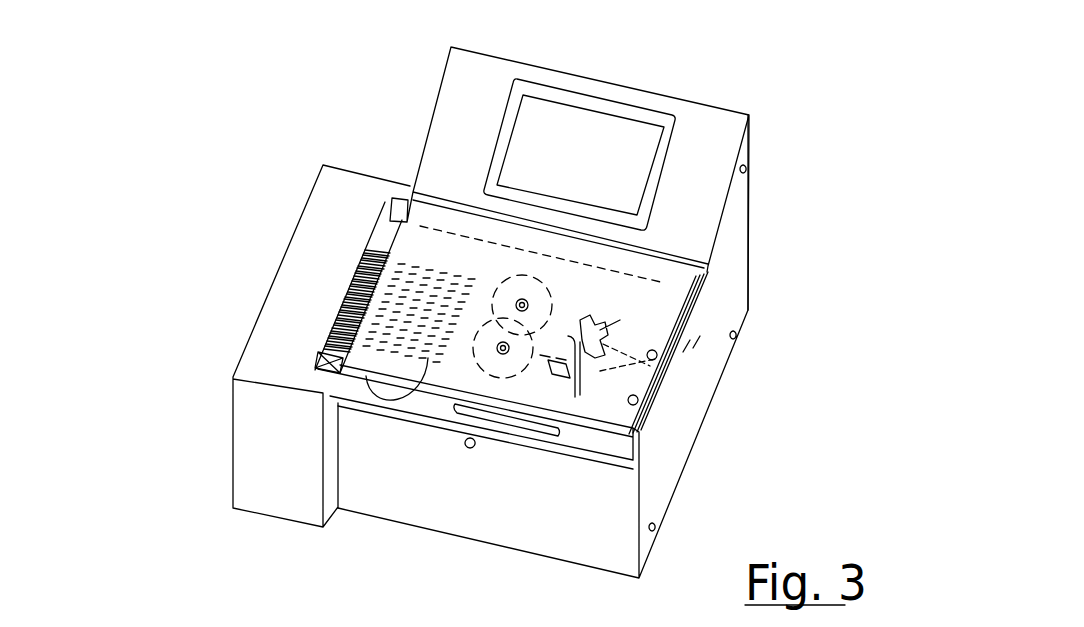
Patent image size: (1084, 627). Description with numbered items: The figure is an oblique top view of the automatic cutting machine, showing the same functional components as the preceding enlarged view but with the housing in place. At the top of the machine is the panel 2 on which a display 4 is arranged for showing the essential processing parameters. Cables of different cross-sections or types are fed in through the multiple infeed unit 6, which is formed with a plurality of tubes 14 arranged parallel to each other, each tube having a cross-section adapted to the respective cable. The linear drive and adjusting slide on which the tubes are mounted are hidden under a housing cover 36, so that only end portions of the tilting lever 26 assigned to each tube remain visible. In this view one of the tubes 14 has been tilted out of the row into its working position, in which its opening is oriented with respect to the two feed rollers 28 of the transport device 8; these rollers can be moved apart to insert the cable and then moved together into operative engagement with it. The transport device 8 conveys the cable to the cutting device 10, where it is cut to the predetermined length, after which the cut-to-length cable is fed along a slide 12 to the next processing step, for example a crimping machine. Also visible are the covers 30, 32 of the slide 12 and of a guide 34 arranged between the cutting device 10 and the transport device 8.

The panel 2 is at (692, 113).
The display 4 is at (543, 113).
The multiple infeed unit 6 is at (320, 371).
The transport device 8 is at (503, 378).
The cutting device 10 is at (593, 393).
The slide 12 is at (600, 376).
The tubes 14 is at (371, 358).
The tilting lever 26 is at (365, 290).
The feed rollers 28 is at (550, 304).
The cover 30 is at (690, 340).
The cover 32 is at (568, 336).
The guide 34 is at (558, 378).
The housing cover 36 is at (320, 227).